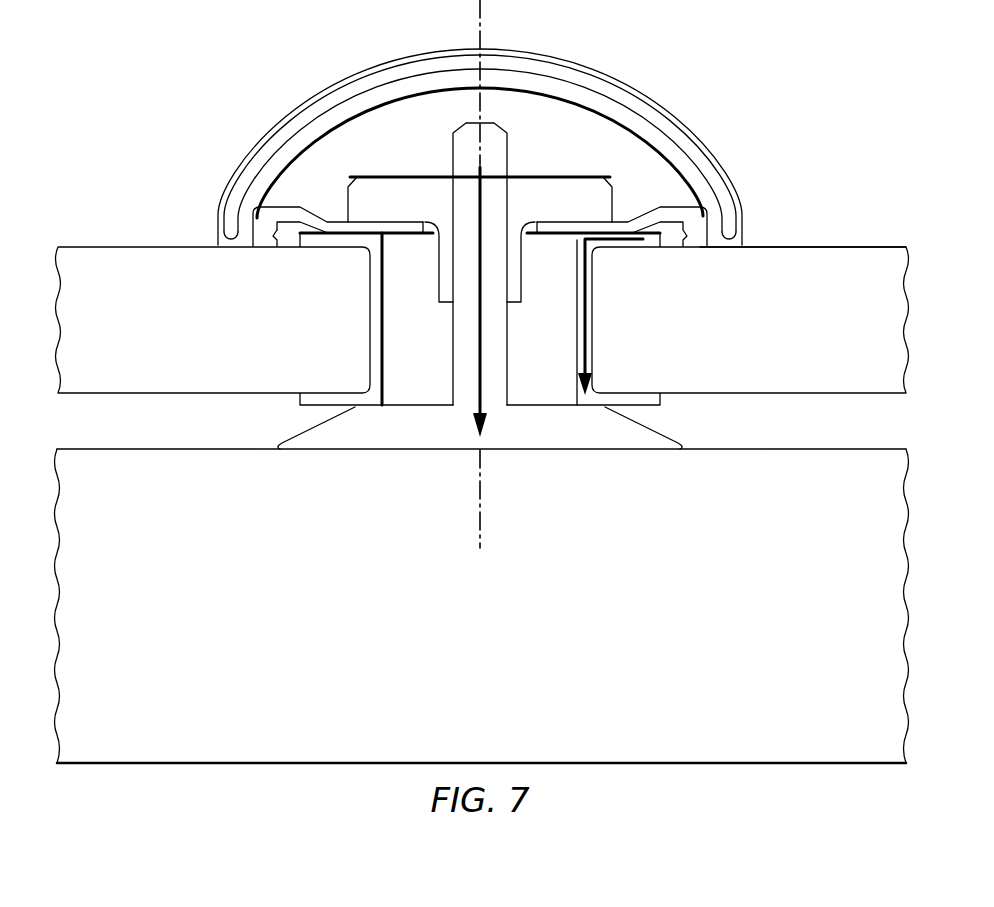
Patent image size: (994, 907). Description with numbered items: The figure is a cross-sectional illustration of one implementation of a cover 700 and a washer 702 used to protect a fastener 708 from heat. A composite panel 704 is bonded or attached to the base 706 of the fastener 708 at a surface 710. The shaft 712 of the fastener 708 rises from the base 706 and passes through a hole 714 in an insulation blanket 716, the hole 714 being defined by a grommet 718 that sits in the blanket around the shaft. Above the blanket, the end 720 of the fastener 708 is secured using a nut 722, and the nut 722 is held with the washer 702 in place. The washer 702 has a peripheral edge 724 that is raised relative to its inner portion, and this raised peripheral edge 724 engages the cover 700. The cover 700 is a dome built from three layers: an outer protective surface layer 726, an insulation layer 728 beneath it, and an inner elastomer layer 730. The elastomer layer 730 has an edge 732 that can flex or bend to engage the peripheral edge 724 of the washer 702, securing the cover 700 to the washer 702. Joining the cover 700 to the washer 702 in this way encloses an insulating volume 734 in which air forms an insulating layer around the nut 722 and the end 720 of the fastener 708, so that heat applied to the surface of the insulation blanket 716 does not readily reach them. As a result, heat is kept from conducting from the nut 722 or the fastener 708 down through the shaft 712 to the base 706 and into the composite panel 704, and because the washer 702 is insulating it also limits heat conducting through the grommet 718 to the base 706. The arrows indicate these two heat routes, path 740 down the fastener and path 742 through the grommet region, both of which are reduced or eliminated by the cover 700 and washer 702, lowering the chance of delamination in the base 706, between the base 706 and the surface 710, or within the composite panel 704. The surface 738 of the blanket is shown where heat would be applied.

The cover 700 is at (480, 124).
The washer 702 is at (660, 202).
The composite panel 704 is at (462, 606).
The base 706 is at (667, 425).
The fastener 708 is at (487, 114).
The surface 710 is at (821, 449).
The shaft 712 is at (452, 330).
The hole 714 is at (526, 343).
The insulation blanket 716 is at (732, 338).
The grommet 718 is at (298, 397).
The end 720 is at (452, 153).
The nut 722 is at (346, 205).
The peripheral edge 724 is at (257, 200).
The protective surface layer 726 is at (560, 58).
The insulation layer 728 is at (650, 107).
The elastomer layer 730 is at (602, 100).
The edge 732 is at (288, 240).
The insulating volume 734 is at (293, 173).
The block top surface 738 is at (828, 245).
The path 740 is at (476, 402).
The path 742 is at (580, 365).